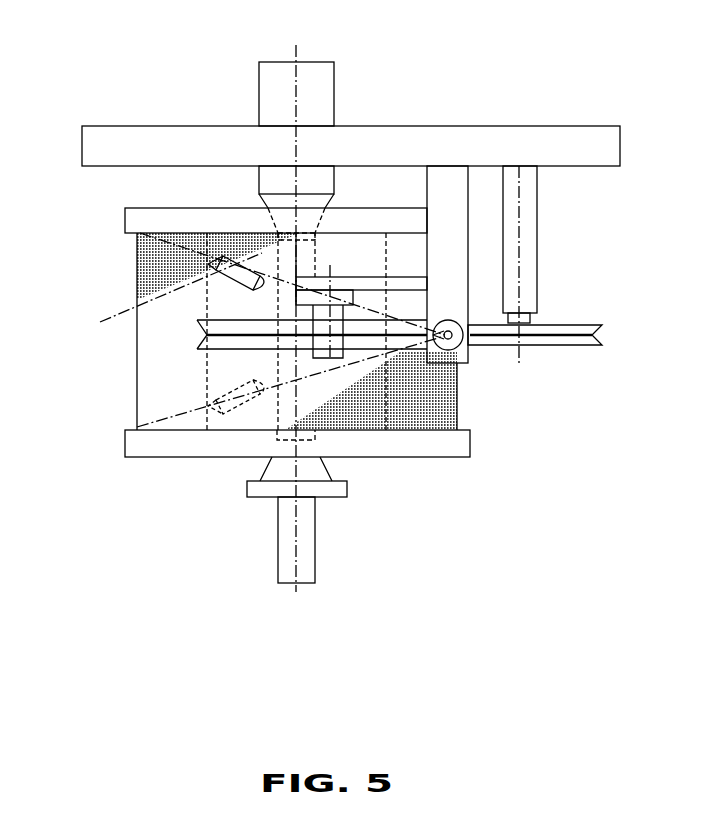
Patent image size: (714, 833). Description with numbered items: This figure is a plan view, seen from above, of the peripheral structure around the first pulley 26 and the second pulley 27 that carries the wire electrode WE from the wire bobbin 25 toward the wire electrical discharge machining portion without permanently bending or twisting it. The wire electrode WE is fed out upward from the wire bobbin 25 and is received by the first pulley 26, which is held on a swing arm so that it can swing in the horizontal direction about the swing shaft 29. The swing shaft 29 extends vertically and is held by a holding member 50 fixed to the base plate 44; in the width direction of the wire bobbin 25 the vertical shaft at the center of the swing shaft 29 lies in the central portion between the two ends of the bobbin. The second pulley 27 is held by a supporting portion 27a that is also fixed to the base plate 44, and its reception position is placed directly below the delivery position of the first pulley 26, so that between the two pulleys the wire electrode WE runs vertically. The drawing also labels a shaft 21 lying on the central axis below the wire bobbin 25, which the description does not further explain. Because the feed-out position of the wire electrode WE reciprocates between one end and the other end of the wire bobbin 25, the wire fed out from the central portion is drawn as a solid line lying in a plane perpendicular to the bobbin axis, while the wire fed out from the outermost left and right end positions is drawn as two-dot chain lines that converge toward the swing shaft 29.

The spindle shaft 21 is at (283, 548).
The wire bobbin 25 is at (128, 222).
The first pulley 26 is at (212, 283).
The second pulley 27 is at (578, 345).
The supporting portion 27a is at (537, 250).
The swing shaft 29 is at (462, 345).
The base plate 44 is at (580, 126).
The holding member 50 is at (462, 195).
The wire electrode WE is at (178, 338).